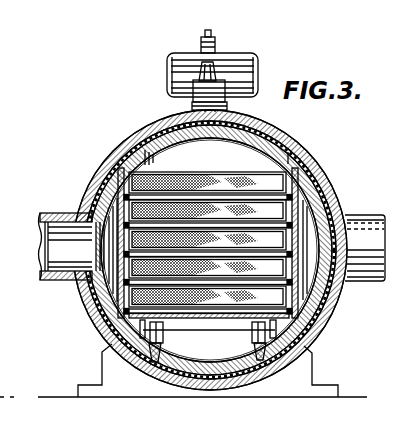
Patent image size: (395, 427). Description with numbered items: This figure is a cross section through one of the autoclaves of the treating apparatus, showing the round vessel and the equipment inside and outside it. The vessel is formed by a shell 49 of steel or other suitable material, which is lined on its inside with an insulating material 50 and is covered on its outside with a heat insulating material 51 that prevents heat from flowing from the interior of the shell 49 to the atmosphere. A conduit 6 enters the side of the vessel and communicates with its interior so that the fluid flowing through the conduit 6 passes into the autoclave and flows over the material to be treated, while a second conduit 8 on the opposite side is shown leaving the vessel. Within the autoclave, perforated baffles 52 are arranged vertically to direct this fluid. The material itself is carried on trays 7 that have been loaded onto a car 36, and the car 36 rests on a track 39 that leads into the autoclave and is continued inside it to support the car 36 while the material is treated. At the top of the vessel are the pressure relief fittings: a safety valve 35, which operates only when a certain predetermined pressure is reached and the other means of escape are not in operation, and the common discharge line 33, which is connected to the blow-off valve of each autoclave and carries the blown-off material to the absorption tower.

The conduit 6 is at (42, 214).
The trays 7 is at (286, 240).
The outlet pipe 8 is at (371, 221).
The common discharge line 33 is at (244, 58).
The safety valve 35 is at (228, 103).
The car 36 is at (123, 325).
The track 39 is at (247, 352).
The shell 49 is at (318, 168).
The insulating material 50 is at (318, 202).
The heat insulating material 51 is at (332, 325).
The perforated baffle 52 is at (115, 210).